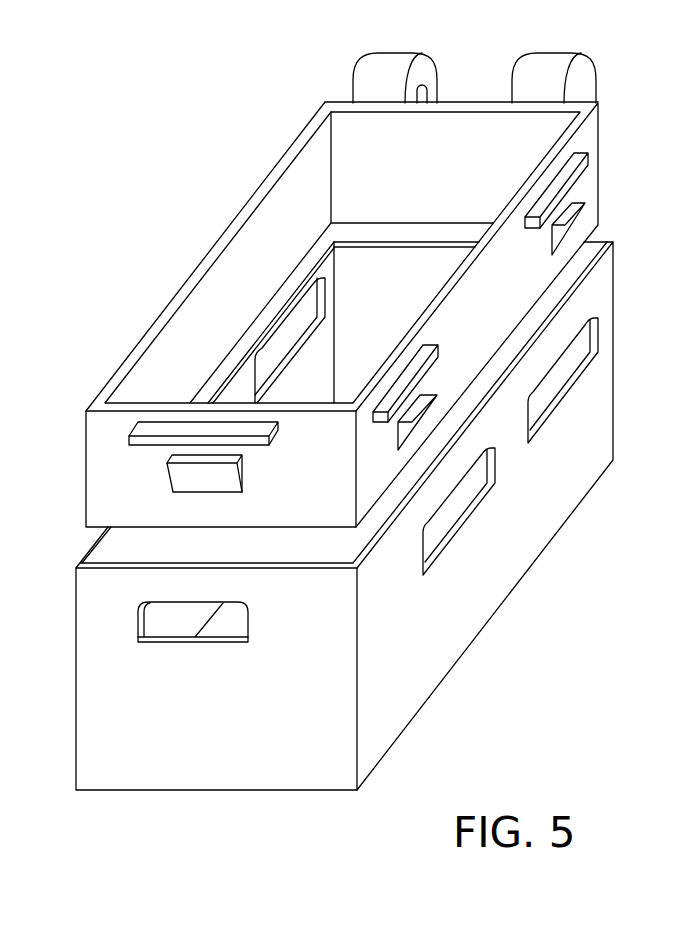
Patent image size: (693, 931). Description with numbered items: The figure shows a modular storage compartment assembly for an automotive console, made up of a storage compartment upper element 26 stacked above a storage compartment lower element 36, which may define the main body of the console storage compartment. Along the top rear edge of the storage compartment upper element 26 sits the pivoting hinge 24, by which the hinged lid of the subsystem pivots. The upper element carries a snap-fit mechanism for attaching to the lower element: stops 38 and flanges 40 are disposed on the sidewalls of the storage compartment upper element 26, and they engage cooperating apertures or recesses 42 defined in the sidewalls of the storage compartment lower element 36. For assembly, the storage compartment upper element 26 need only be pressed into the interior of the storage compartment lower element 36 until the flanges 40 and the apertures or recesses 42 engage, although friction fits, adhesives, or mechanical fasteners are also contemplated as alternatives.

The pivoting hinge 24 is at (585, 80).
The storage compartment upper element 26 is at (590, 125).
The storage compartment lower element 36 is at (600, 452).
The stops 38 is at (268, 437).
The flanges 40 is at (237, 480).
The apertures or recesses 42 is at (248, 617).